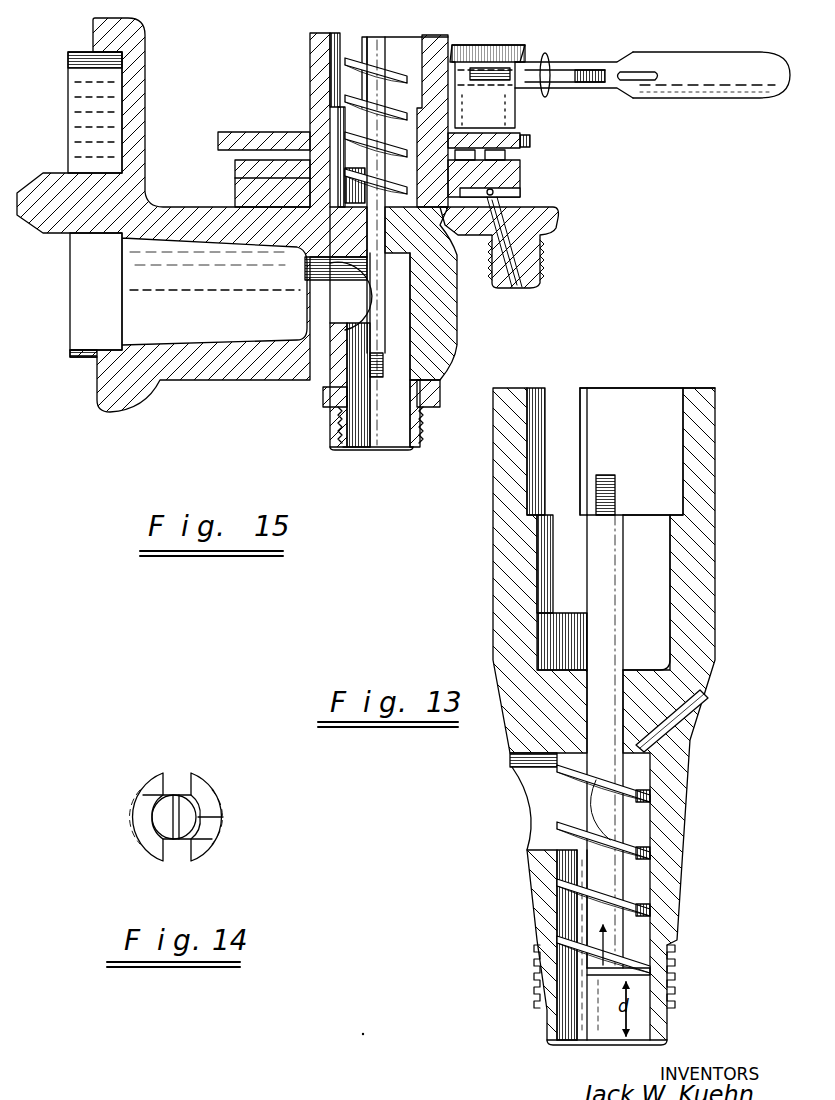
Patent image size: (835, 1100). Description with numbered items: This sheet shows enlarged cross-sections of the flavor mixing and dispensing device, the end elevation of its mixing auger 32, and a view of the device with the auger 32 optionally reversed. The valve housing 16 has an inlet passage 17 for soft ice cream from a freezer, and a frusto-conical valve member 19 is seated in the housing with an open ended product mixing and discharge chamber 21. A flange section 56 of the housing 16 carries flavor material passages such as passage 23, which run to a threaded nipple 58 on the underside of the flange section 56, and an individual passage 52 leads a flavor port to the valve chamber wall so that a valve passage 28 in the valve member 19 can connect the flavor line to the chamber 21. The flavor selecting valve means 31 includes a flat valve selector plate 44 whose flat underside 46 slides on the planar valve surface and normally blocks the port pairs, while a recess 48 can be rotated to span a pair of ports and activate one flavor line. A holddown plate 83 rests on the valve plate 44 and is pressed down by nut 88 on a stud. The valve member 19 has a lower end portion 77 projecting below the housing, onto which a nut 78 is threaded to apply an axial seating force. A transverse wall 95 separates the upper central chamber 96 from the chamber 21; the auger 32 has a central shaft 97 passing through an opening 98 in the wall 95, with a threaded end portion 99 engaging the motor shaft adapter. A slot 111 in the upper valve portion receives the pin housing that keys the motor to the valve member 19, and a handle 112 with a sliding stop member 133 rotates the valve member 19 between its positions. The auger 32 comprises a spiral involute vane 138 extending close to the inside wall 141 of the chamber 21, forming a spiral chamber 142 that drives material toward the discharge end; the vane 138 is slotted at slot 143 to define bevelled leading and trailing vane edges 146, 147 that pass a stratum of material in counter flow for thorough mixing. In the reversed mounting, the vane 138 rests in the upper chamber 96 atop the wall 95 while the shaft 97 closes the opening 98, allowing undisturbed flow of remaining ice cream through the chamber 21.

In FIG. 15, the valve housing 16 is at (228, 382).
In FIG. 15, the inlet passage 17 is at (196, 317).
In FIG. 15, the valve member 19 is at (445, 318).
In FIG. 13, the valve member 19 is at (507, 666).
In FIG. 15, the product mixing and discharge chamber 21 is at (383, 450).
In FIG. 13, the product mixing and discharge chamber 21 is at (573, 1042).
In FIG. 15, the flavor material passage 23 is at (533, 258).
In FIG. 15, the valve passage 28 is at (435, 296).
In FIG. 15, the valve means 31 is at (525, 172).
In FIG. 15, the auger 32 is at (395, 66).
In FIG. 13, the auger 32 is at (548, 804).
In FIG. 14, the auger 32 is at (213, 774).
In FIG. 15, the valve selector plate 44 is at (520, 185).
In FIG. 15, the flat underside 46 is at (240, 204).
In FIG. 15, the recess 48 is at (505, 191).
In FIG. 15, the passage 52 is at (450, 228).
In FIG. 15, the flange section 56 is at (560, 216).
In FIG. 15, the threaded nipple 58 is at (528, 286).
In FIG. 15, the lower end portion 77 is at (340, 432).
In FIG. 13, the lower end portion 77 is at (540, 1032).
In FIG. 15, the nut 78 is at (323, 394).
In FIG. 15, the holddown plate 83 is at (530, 141).
In FIG. 15, the nut 88 is at (505, 104).
In FIG. 15, the transverse wall 95 is at (332, 180).
In FIG. 15, the upper central chamber 96 is at (415, 150).
In FIG. 15, the central shaft 97 is at (375, 292).
In FIG. 13, the central shaft 97 is at (625, 597).
In FIG. 15, the opening 98 is at (330, 266).
In FIG. 15, the threaded end portion 99 is at (384, 372).
In FIG. 13, the threaded end portion 99 is at (612, 505).
In FIG. 15, the slot 111 is at (360, 44).
In FIG. 13, the slot 111 is at (583, 397).
In FIG. 15, the handle 112 is at (700, 95).
In FIG. 15, the stop member 133 is at (573, 78).
In FIG. 15, the spiral involute vane 138 is at (357, 307).
In FIG. 13, the spiral involute vane 138 is at (557, 852).
In FIG. 14, the spiral involute vane 138 is at (131, 818).
In FIG. 13, the inside wall 141 is at (655, 903).
In FIG. 13, the spiral chamber 142 is at (640, 940).
In FIG. 13, the slot 143 is at (603, 977).
In FIG. 14, the slot 143 is at (178, 780).
In FIG. 13, the leading vane edge 146 is at (602, 965).
In FIG. 13, the trailing vane edge 147 is at (618, 838).